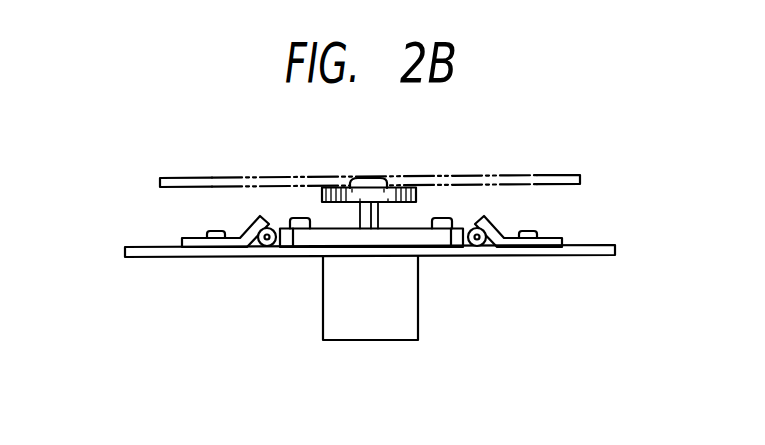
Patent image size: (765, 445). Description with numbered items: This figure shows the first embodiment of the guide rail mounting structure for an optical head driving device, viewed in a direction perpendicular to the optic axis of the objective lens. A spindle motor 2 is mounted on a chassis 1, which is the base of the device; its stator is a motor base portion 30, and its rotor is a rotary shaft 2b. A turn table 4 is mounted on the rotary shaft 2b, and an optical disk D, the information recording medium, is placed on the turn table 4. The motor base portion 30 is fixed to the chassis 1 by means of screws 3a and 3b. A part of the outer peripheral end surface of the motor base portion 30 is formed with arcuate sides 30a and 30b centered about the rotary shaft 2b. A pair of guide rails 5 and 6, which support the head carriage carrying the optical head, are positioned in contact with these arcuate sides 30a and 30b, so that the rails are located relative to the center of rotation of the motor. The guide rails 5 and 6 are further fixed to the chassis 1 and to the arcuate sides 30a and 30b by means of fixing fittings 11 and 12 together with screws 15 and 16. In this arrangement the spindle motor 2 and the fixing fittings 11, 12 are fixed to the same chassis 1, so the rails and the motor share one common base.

The chassis 1 is at (162, 256).
The spindle motor 2 is at (361, 341).
The rotary shaft 2b is at (368, 210).
The screw 3a is at (445, 217).
The screw 3b is at (300, 217).
The turn table 4 is at (337, 187).
The guide rail 5 is at (487, 248).
The guide rail 6 is at (261, 248).
The fixing fitting 11 is at (489, 218).
The fixing fitting 12 is at (255, 216).
The screw 15 is at (528, 230).
The screw 16 is at (216, 231).
The motor base portion 30 is at (413, 247).
The arcuate side 30a is at (457, 250).
The arcuate side 30b is at (283, 253).
The optical disk D is at (580, 180).